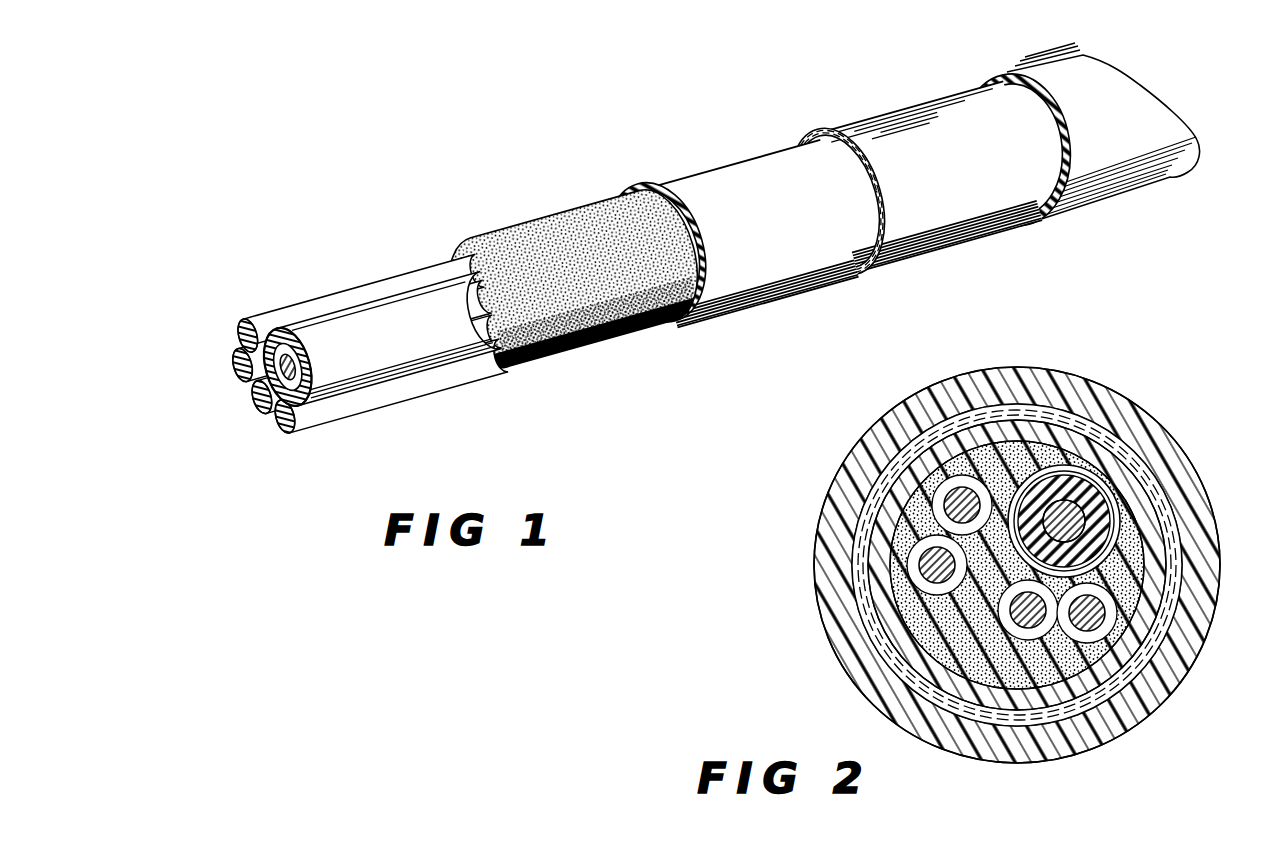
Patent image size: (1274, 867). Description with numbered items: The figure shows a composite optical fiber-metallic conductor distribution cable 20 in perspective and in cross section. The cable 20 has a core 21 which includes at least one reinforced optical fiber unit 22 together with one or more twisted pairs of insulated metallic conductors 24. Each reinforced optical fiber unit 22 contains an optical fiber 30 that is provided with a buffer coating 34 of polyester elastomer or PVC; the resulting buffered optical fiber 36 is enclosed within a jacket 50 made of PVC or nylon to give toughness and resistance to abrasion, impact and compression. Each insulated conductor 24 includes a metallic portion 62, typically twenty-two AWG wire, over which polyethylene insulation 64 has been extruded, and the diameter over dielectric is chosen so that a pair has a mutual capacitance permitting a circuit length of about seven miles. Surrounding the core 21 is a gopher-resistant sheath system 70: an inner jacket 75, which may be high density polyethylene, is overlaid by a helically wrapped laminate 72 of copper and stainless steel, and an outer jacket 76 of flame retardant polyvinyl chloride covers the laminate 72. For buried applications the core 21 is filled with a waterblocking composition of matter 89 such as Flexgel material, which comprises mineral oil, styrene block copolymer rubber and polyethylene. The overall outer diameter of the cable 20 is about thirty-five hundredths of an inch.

In FIG. 1, the cable 20 is at (570, 172).
In FIG. 2, the core 21 is at (1010, 425).
In FIG. 1, the reinforced optical fiber unit 22 is at (363, 298).
In FIG. 2, the reinforced optical fiber unit 22 is at (1129, 508).
In FIG. 1, the insulated metallic conductors 24 is at (285, 425).
In FIG. 2, the insulated metallic conductors 24 is at (925, 515).
In FIG. 2, the optical fiber 30 is at (1085, 521).
In FIG. 2, the buffer coating 34 is at (1105, 500).
In FIG. 2, the buffered optical fiber 36 is at (1110, 560).
In FIG. 1, the jacket 50 is at (283, 328).
In FIG. 2, the metallic portion 62 is at (920, 450).
In FIG. 2, the insulation 64 is at (955, 450).
In FIG. 1, the sheath system 70 is at (1103, 134).
In FIG. 2, the sheath system 70 is at (1113, 390).
In FIG. 1, the helically wrapped laminate 72 is at (838, 128).
In FIG. 2, the helically wrapped laminate 72 is at (1122, 722).
In FIG. 1, the inner jacket 75 is at (648, 182).
In FIG. 2, the inner jacket 75 is at (1016, 710).
In FIG. 1, the outer jacket 76 is at (977, 83).
In FIG. 2, the outer jacket 76 is at (1170, 673).
In FIG. 1, the waterblocking composition of matter 89 is at (510, 230).
In FIG. 2, the waterblocking composition of matter 89 is at (920, 600).